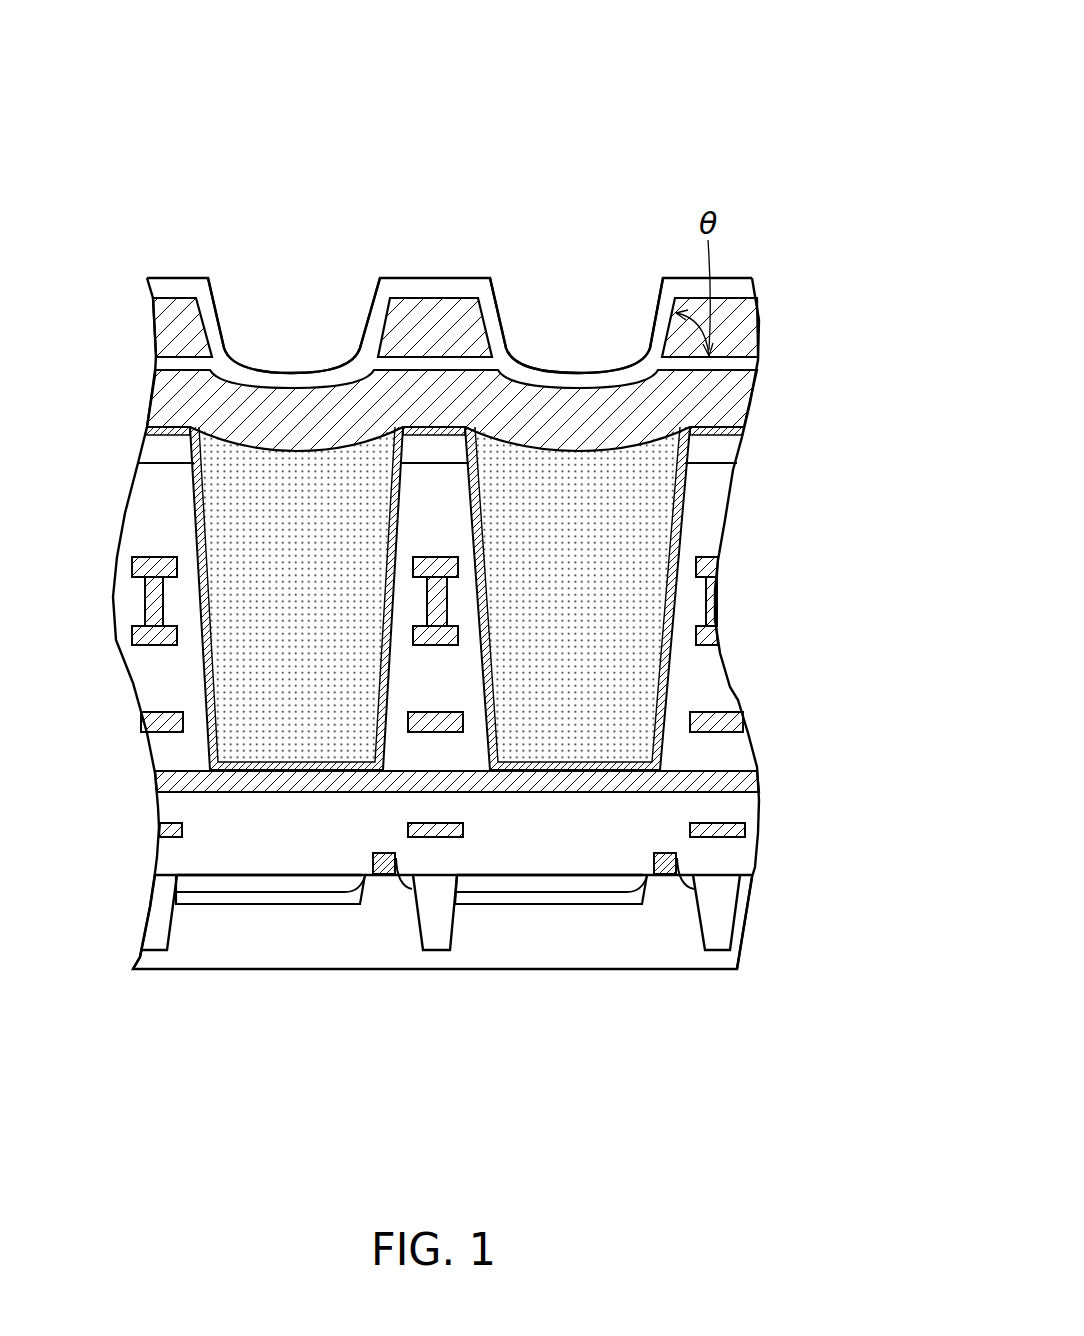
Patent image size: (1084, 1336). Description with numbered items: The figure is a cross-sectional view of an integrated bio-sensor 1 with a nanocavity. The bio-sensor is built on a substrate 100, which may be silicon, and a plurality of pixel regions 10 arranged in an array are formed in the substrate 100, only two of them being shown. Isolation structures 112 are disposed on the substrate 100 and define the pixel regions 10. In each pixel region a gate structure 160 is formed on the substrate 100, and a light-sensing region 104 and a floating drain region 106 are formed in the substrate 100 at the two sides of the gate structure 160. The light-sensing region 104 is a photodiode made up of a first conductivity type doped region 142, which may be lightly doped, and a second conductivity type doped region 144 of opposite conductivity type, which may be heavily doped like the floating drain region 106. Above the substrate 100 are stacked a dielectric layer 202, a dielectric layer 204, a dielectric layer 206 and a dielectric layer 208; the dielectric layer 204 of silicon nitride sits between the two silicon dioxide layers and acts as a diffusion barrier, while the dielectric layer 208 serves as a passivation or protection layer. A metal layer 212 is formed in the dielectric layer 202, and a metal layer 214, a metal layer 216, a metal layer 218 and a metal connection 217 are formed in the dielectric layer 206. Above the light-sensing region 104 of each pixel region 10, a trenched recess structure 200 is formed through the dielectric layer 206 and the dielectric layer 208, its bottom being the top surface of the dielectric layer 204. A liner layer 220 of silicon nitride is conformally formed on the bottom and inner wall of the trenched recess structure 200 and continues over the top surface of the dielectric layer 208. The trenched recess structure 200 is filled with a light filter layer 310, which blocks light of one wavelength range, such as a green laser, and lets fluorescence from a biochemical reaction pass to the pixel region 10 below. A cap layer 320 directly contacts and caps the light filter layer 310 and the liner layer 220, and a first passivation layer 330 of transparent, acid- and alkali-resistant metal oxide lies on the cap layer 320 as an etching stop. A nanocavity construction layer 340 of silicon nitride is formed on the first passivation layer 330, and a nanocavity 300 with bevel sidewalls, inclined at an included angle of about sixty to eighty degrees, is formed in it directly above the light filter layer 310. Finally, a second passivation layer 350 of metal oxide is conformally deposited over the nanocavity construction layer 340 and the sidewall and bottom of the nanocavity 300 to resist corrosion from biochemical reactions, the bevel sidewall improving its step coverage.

The integrated bio-sensor 1 is at (753, 108).
The pixel region 10 is at (321, 929).
The substrate 100 is at (535, 947).
The light-sensing region 104 is at (168, 1042).
The floating drain region 106 is at (393, 890).
The isolation structure 112 is at (152, 930).
The first conductivity type doped region 142 is at (258, 895).
The second conductivity type doped region 144 is at (208, 883).
The gate structure 160 is at (368, 851).
The trenched recess structure 200 is at (192, 510).
The dielectric layer 202 is at (745, 857).
The dielectric layer 204 is at (760, 782).
The dielectric layer 206 is at (720, 684).
The dielectric layer 208 is at (723, 456).
The metal layer 212 is at (760, 829).
The metal layer 214 is at (746, 723).
The metal layer 216 is at (712, 637).
The metal connection 217 is at (712, 600).
The metal layer 218 is at (706, 567).
The liner layer 220 is at (723, 431).
The nanocavity 300 is at (289, 288).
The light filter layer 310 is at (318, 632).
The cap layer 320 is at (723, 398).
The first passivation layer 330 is at (723, 365).
The nanocavity construction layer 340 is at (723, 327).
The second passivation layer 350 is at (723, 291).